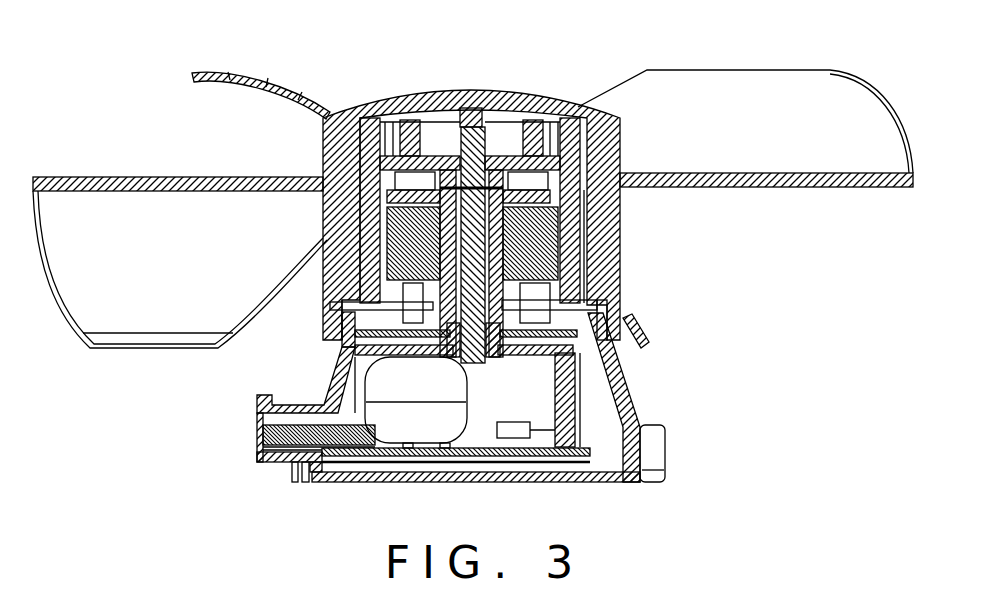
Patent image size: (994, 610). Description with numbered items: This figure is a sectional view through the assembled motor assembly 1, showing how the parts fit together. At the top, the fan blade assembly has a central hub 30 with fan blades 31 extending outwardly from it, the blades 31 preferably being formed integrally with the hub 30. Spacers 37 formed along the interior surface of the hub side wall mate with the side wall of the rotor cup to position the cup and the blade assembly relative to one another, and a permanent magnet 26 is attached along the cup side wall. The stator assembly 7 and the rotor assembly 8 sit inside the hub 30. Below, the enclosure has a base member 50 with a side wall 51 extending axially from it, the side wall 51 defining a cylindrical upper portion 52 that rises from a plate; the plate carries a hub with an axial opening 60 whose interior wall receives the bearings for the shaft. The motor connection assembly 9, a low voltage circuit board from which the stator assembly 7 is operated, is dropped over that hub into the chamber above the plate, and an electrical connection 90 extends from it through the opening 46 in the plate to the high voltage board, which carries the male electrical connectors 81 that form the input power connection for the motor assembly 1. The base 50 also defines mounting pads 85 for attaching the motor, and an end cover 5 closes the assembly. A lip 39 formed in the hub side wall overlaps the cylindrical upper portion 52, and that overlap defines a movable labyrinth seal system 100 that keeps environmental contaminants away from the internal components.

The motor assembly 1 is at (558, 48).
The end cover 5 is at (593, 485).
The stator assembly 7 is at (540, 242).
The rotor assembly 8 is at (583, 231).
The motor connection assembly 9 is at (557, 290).
The permanent magnet 26 is at (330, 277).
The central hub 30 is at (455, 97).
The fan blades 31 is at (188, 177).
The spacers 37 is at (407, 137).
The lip 39 is at (332, 333).
The opening 46 is at (590, 302).
The base member 50 is at (655, 443).
The side wall 51 is at (623, 385).
The cylindrical upper portion 52 is at (345, 350).
The axial opening 60 is at (503, 223).
The male electrical connectors 81 is at (282, 462).
The mounting pads 85 is at (657, 463).
The electrical connection 90 is at (580, 395).
The labyrinth seal system 100 is at (618, 352).